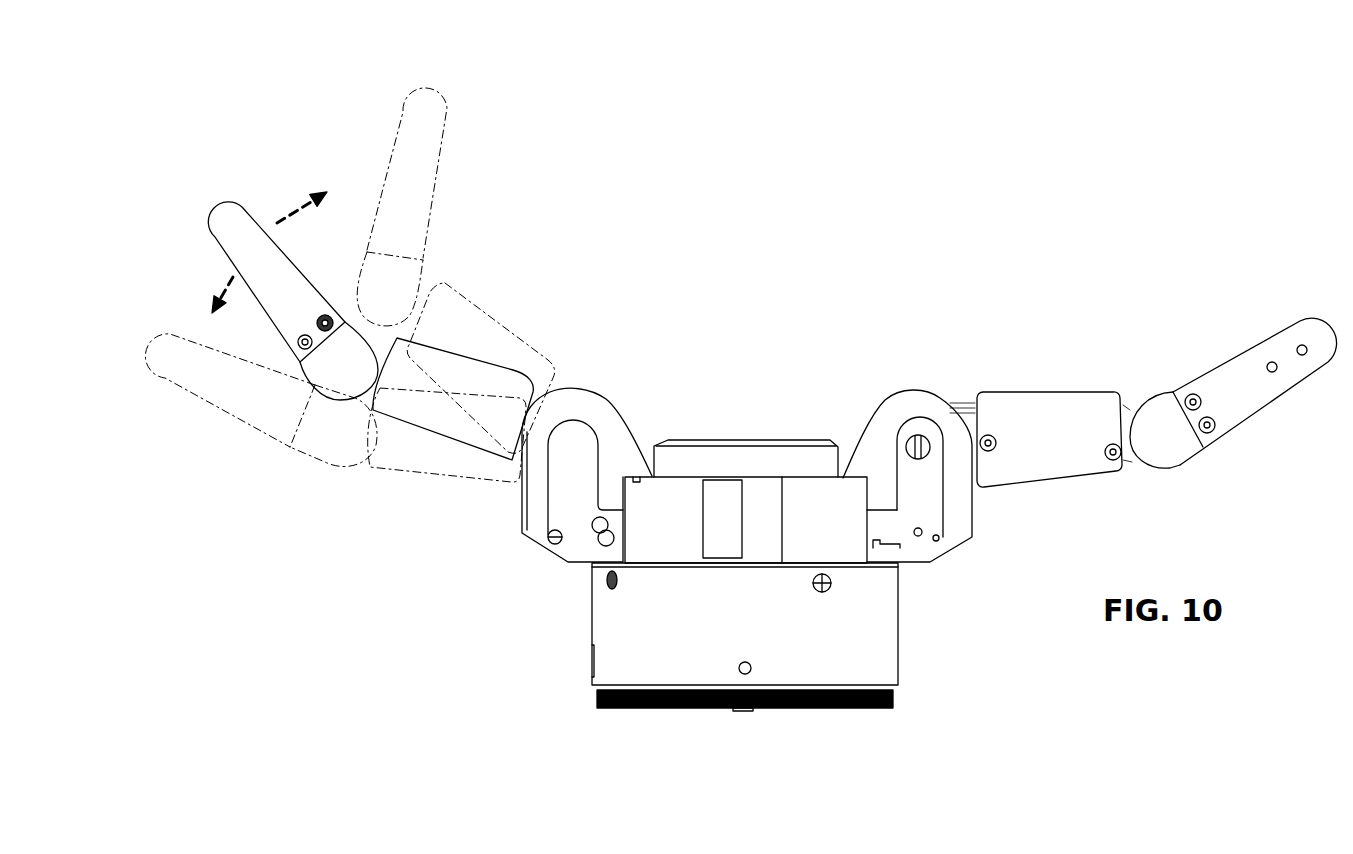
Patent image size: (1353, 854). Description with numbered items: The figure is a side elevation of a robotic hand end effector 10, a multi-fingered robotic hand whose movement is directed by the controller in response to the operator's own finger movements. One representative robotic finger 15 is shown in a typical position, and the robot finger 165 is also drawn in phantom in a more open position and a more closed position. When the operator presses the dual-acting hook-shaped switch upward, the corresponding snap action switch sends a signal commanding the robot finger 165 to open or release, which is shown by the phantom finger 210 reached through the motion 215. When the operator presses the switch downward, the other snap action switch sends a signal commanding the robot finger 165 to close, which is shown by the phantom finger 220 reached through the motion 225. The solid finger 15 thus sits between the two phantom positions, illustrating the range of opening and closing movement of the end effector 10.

The robotic end effector 10 is at (505, 608).
The finger 15 is at (717, 292).
The robot finger 165 is at (198, 187).
The phantom finger 210 is at (167, 337).
The motion 215 is at (223, 290).
The phantom finger 220 is at (447, 105).
The motion 225 is at (300, 193).